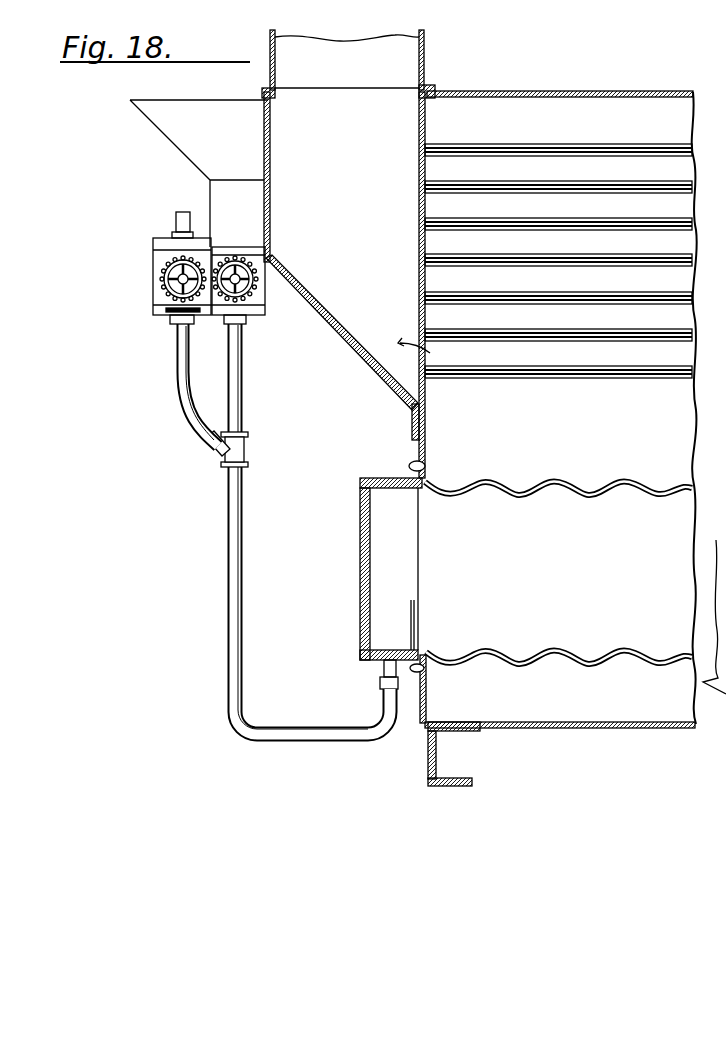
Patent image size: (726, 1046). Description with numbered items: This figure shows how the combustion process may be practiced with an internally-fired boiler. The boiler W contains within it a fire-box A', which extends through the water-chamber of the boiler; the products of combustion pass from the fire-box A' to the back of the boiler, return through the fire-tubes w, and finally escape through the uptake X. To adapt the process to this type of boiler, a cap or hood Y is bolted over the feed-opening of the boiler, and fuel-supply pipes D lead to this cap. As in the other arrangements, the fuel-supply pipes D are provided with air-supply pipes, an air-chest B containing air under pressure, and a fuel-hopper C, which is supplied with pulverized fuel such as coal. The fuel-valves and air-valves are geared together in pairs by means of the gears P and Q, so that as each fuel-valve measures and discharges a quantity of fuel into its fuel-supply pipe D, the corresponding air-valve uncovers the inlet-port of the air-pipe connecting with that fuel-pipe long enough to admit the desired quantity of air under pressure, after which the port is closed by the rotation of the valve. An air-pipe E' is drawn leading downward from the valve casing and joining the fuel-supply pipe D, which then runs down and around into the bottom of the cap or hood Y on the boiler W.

The uptake X is at (348, 254).
The fire-tubes w is at (424, 221).
The boiler W is at (558, 458).
The fire-box A' is at (559, 604).
The cap or hood Y is at (366, 478).
The fuel-supply pipes D is at (243, 503).
The pipe E' is at (173, 380).
The air-chest B is at (187, 263).
The gear Q is at (160, 292).
The gear P is at (252, 300).
The fuel-hopper C is at (168, 140).